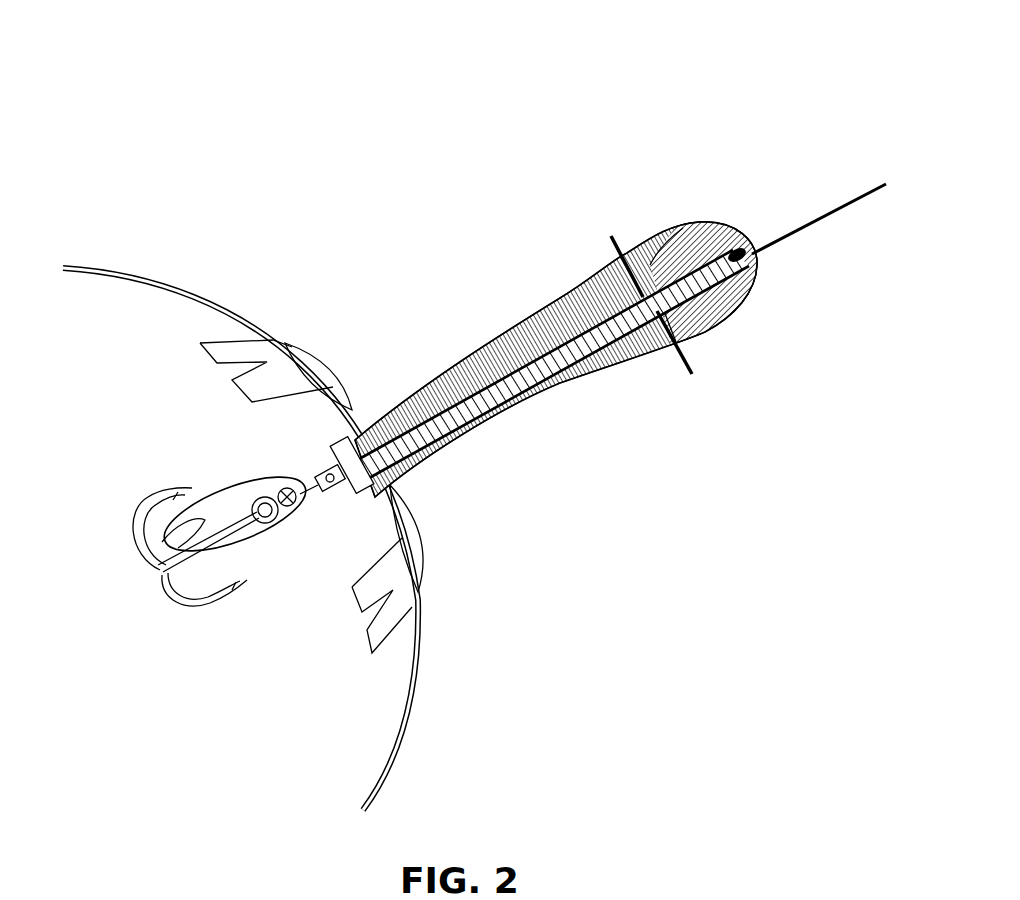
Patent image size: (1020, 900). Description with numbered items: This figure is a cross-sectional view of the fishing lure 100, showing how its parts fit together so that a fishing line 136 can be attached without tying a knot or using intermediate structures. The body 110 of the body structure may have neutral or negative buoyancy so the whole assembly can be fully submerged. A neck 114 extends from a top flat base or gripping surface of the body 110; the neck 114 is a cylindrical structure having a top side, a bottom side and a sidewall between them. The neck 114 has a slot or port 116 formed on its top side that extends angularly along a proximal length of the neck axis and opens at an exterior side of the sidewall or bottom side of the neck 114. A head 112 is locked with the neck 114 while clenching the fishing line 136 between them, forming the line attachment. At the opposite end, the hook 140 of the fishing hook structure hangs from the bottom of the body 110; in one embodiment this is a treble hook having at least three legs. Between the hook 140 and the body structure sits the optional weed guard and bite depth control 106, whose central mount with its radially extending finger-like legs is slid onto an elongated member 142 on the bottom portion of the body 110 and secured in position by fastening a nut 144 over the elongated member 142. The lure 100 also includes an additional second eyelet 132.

The fishing lure 100 is at (750, 60).
The weed guard and bite depth control 106 is at (122, 248).
The body 110 is at (512, 318).
The head 112 is at (683, 240).
The neck 114 is at (718, 330).
The port 116 is at (748, 300).
The second eyelet 132 is at (690, 378).
The fishing line 136 is at (790, 227).
The hook 140 is at (137, 540).
The elongated member 142 is at (340, 500).
The nut 144 is at (335, 448).